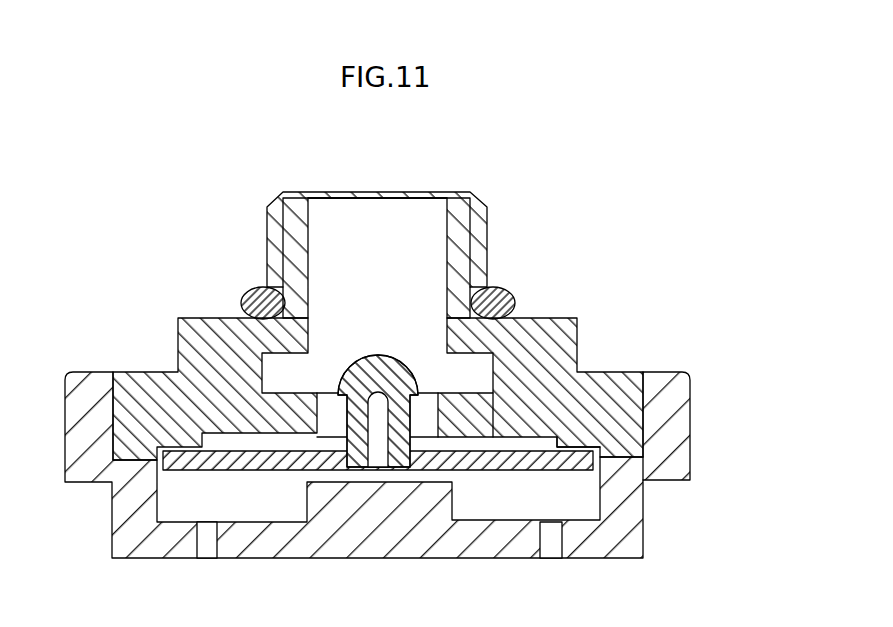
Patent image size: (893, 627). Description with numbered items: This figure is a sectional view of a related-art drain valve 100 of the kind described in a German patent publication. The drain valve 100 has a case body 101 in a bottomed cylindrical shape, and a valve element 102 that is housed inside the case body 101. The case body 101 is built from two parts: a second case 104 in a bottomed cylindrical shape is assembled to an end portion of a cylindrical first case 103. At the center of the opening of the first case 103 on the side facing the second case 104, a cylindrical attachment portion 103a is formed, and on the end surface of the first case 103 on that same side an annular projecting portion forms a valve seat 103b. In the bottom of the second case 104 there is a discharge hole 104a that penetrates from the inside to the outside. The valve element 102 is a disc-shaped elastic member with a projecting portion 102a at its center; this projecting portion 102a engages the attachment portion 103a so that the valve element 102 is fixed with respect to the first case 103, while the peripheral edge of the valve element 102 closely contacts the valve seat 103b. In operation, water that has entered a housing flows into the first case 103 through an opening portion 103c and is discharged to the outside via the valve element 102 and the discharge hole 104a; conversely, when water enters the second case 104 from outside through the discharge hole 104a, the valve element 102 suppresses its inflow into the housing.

The drain valve 100 is at (410, 232).
The case body 101 is at (470, 191).
The valve element 102 is at (378, 446).
The projecting portion 102a is at (370, 356).
The first case 103 is at (378, 311).
The attachment portion 103a is at (452, 408).
The valve seat 103b is at (555, 446).
The opening portion 103c is at (443, 212).
The second case 104 is at (414, 487).
The discharge hole 104a is at (552, 541).